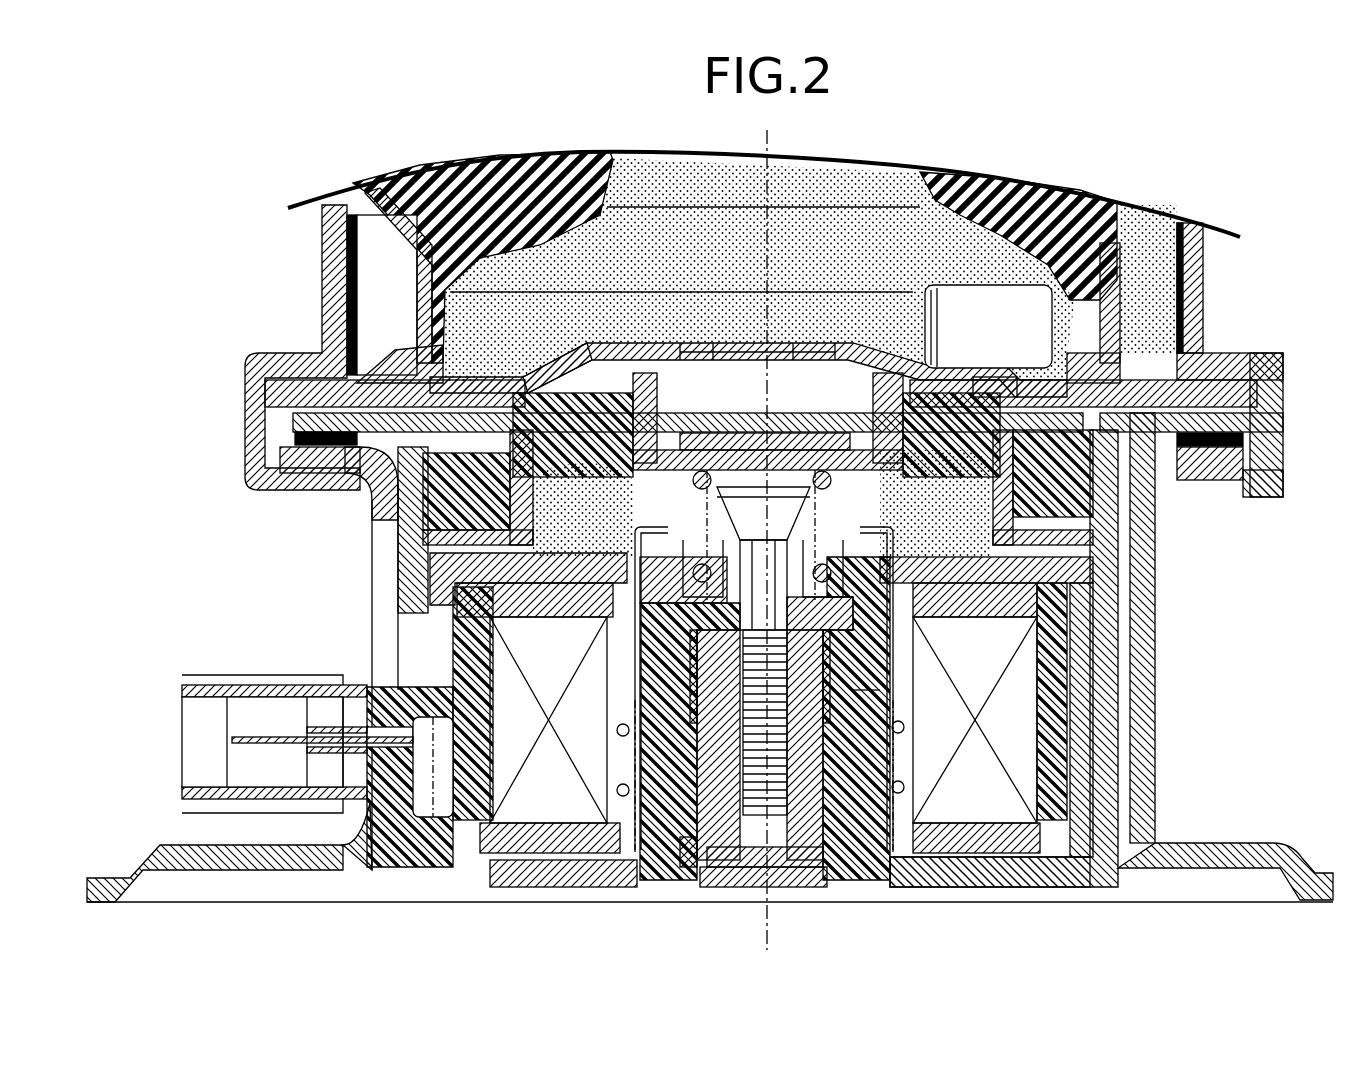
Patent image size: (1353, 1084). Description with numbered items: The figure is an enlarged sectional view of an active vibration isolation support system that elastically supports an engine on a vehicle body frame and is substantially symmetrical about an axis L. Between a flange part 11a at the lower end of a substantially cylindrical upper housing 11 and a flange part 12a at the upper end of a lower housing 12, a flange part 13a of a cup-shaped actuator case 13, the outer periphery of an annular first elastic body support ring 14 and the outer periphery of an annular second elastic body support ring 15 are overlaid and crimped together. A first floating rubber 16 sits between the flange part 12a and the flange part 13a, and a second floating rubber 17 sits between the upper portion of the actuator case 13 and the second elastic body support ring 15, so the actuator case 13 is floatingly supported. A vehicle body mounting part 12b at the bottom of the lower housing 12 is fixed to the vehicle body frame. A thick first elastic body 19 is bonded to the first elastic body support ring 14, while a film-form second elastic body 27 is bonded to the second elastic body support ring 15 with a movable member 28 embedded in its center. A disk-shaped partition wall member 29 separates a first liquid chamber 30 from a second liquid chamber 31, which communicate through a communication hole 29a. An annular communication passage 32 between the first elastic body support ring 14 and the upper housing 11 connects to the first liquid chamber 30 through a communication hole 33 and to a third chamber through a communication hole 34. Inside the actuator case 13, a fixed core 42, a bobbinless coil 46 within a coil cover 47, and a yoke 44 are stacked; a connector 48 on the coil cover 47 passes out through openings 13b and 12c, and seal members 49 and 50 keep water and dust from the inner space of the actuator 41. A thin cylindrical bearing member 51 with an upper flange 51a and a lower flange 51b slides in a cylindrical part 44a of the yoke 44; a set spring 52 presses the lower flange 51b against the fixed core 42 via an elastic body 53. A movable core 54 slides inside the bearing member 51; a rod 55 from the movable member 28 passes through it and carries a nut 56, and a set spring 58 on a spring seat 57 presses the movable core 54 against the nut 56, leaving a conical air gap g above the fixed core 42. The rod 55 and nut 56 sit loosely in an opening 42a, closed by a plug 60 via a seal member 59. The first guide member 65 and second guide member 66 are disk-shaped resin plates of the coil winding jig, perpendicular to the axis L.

The upper housing 11 is at (324, 297).
The flange part 11a is at (262, 410).
The lower housing 12 is at (1164, 607).
The flange part 12a is at (1237, 470).
The vehicle body mounting part 12b is at (1242, 843).
The opening 12c is at (370, 548).
The actuator case 13 is at (1116, 753).
The flange part 13a is at (1250, 357).
The opening 13b is at (398, 640).
The first elastic body support ring 14 is at (420, 310).
The second elastic body support ring 15 is at (488, 383).
The first floating rubber 16 is at (300, 492).
The second floating rubber 17 is at (398, 560).
The first elastic body 19 is at (482, 257).
The second elastic body 27 is at (985, 393).
The movable member 28 is at (678, 437).
The partition wall member 29 is at (637, 340).
The communication hole 29a is at (747, 347).
The first liquid chamber 30 is at (679, 264).
The second liquid chamber 31 is at (578, 372).
The communication passage 32 is at (362, 297).
The communication hole 33 is at (1003, 300).
The communication hole 34 is at (1165, 250).
The actuator 41 is at (850, 495).
The fixed core 42 is at (880, 891).
The opening 42a is at (710, 820).
The yoke 44 is at (977, 559).
The cylindrical part 44a is at (903, 667).
The bobbinless coil 46 is at (567, 777).
The coil cover 47 is at (492, 703).
The connector 48 is at (228, 697).
The seal member 49 is at (555, 590).
The seal member 50 is at (547, 890).
The bearing member 51 is at (892, 577).
The upper flange 51a is at (633, 532).
The lower flange 51b is at (622, 855).
The set spring 52 is at (905, 720).
The elastic body 53 is at (923, 813).
The movable core 54 is at (682, 685).
The rod 55 is at (777, 563).
The nut 56 is at (727, 747).
The spring seat 57 is at (698, 528).
The set spring 58 is at (803, 517).
The seal member 59 is at (688, 870).
The plug 60 is at (750, 890).
The first guide member 65 is at (540, 832).
The second guide member 66 is at (552, 617).
The air gap g is at (866, 683).
The axis L is at (770, 236).